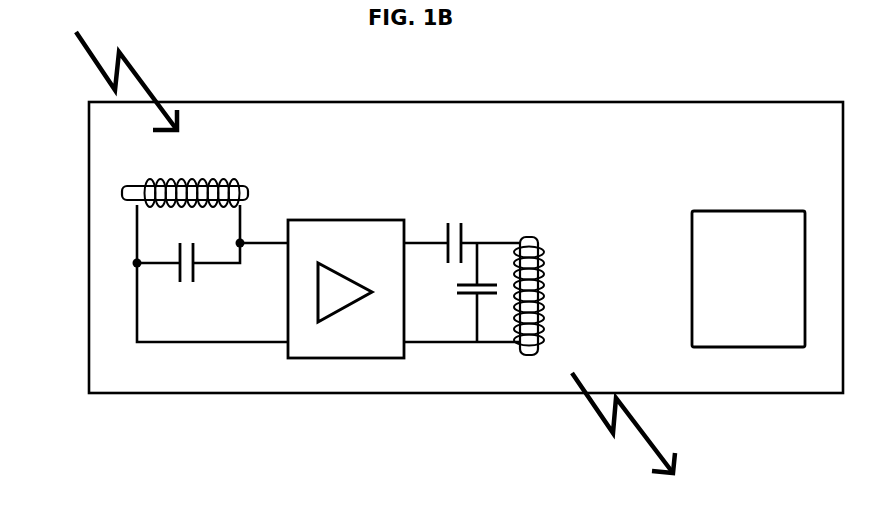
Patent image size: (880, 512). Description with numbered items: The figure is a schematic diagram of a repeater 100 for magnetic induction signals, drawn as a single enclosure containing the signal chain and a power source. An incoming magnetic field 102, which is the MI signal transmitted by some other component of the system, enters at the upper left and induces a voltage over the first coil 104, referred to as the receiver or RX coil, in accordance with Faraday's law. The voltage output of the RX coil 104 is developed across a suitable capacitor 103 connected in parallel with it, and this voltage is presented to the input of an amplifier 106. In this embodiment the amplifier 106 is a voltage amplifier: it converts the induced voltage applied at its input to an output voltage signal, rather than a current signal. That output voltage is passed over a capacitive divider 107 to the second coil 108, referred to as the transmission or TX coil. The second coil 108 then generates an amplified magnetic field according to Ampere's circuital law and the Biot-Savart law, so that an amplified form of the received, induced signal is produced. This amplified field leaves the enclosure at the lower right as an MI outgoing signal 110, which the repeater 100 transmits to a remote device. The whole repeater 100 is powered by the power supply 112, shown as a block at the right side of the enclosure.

The repeater 100 is at (725, 79).
The magnetic field 102 is at (150, 70).
The capacitor 103 is at (183, 298).
The first coil 104 is at (144, 169).
The amplifier 106 is at (337, 220).
The capacitive divider 107 is at (468, 310).
The second coil 108 is at (547, 290).
The MI outgoing signal 110 is at (655, 437).
The power supply 112 is at (730, 211).